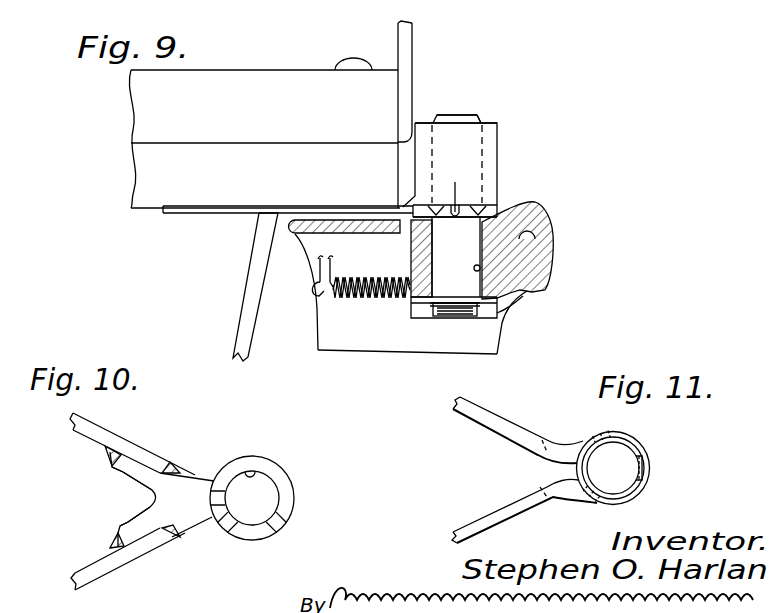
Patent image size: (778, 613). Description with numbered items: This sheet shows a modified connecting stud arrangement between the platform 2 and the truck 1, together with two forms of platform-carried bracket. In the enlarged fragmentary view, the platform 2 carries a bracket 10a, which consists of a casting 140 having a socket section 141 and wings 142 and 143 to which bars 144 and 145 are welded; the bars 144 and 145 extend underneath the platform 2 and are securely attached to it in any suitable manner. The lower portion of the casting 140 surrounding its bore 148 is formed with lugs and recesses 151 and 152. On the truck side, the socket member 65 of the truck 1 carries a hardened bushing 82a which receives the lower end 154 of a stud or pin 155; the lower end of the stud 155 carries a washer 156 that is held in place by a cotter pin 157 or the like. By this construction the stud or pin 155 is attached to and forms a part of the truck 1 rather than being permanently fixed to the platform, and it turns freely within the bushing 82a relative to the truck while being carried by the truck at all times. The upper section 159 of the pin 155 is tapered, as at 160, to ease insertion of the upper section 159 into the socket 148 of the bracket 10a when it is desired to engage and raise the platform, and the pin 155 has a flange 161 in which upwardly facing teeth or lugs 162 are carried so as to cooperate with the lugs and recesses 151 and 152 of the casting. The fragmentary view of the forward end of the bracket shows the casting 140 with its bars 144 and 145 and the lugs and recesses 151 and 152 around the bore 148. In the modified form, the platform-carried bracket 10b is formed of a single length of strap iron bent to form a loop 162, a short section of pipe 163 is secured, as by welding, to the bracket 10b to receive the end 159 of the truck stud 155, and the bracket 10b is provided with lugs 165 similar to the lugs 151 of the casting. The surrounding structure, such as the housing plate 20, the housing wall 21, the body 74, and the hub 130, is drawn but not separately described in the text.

In FIG. 9, the truck 1 is at (518, 331).
In FIG. 9, the platform 2 is at (303, 63).
In FIG. 9, the bracket 10a is at (504, 158).
In FIG. 10, the bracket 10a is at (180, 447).
In FIG. 11, the bracket 10b is at (529, 421).
In FIG. 9, the housing plate 20 is at (345, 356).
In FIG. 9, the housing wall 21 is at (310, 330).
In FIG. 9, the socket member 65 is at (403, 253).
In FIG. 9, the housing body 74 is at (412, 278).
In FIG. 9, the hardened bushing 82a is at (481, 268).
In FIG. 9, the hub boss 130 is at (520, 238).
In FIG. 10, the casting 140 is at (195, 477).
In FIG. 9, the socket section 141 is at (495, 135).
In FIG. 10, the socket section 141 is at (293, 490).
In FIG. 10, the wing 142 is at (120, 482).
In FIG. 10, the wing 143 is at (127, 527).
In FIG. 10, the bar 144 is at (90, 428).
In FIG. 9, the bar 145 is at (243, 220).
In FIG. 10, the bar 145 is at (103, 574).
In FIG. 10, the bore 148 is at (255, 477).
In FIG. 9, the lugs 151 is at (455, 188).
In FIG. 10, the lugs 151 is at (268, 527).
In FIG. 9, the recesses 152 is at (497, 196).
In FIG. 10, the recesses 152 is at (292, 503).
In FIG. 9, the lower end 154 is at (414, 299).
In FIG. 9, the stud or pin 155 is at (489, 111).
In FIG. 9, the washer 156 is at (478, 312).
In FIG. 9, the cotter pin 157 is at (455, 320).
In FIG. 9, the upper section 159 is at (477, 118).
In FIG. 9, the taper 160 is at (447, 120).
In FIG. 9, the flange 161 is at (500, 214).
In FIG. 9, the teeth or lugs 162 is at (478, 212).
In FIG. 11, the teeth or lugs 162 is at (645, 455).
In FIG. 11, the section of pipe 163 is at (643, 470).
In FIG. 11, the lugs 165 is at (607, 430).